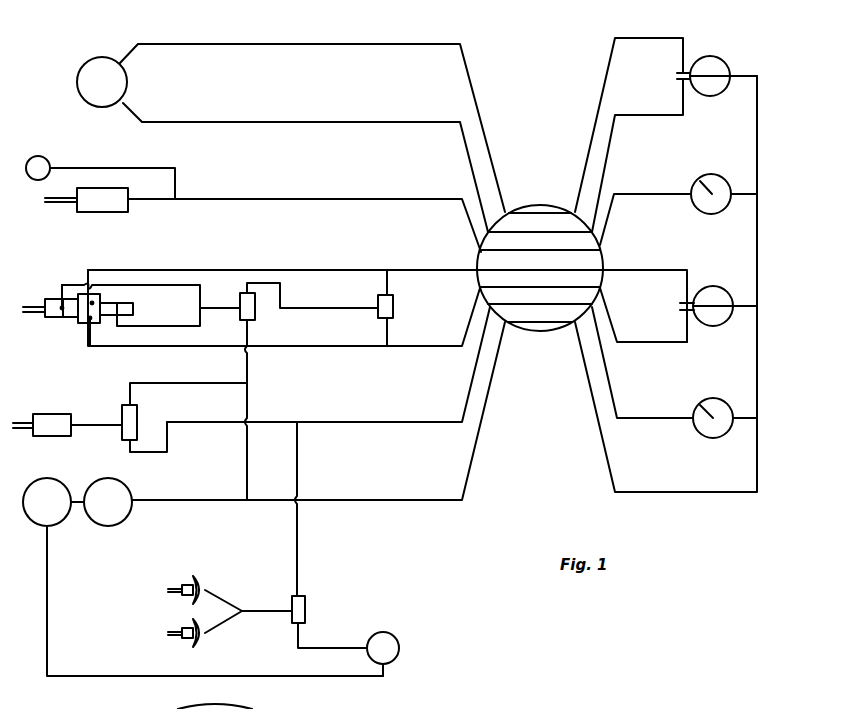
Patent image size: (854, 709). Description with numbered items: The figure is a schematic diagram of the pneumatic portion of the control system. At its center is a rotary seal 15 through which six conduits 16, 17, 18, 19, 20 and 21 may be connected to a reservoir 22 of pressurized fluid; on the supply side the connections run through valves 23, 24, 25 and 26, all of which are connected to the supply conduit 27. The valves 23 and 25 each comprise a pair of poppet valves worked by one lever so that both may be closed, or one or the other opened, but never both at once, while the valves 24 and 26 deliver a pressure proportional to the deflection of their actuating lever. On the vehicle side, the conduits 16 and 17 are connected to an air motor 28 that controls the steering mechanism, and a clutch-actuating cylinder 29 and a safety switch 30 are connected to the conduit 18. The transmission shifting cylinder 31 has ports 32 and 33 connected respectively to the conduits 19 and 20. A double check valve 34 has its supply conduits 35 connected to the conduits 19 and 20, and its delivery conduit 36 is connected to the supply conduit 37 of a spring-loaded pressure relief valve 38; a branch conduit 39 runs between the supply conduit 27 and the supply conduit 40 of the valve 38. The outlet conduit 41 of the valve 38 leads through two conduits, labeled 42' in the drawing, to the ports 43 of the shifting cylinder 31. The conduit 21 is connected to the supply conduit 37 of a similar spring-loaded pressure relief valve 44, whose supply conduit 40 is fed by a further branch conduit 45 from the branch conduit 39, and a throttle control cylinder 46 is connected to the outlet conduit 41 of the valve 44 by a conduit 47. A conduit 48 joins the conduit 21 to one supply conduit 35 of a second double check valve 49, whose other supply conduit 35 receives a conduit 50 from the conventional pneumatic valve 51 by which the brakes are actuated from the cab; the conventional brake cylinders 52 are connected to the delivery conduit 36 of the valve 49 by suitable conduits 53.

The rotary seal 15 is at (538, 206).
The conduit 16 is at (378, 44).
The conduit 17 is at (380, 122).
The conduit 18 is at (388, 199).
The conduit 19 is at (349, 270).
The conduit 20 is at (346, 346).
The conduit 21 is at (355, 422).
The reservoir 22 is at (102, 518).
The valve 23 is at (722, 66).
The valve 24 is at (728, 178).
The valve 25 is at (726, 290).
The valve 26 is at (728, 403).
The supply conduit 27 is at (757, 358).
The air motor 28 is at (97, 62).
The clutch-actuating cylinder 29 is at (86, 214).
The safety switch 30 is at (47, 160).
The transmission shifting cylinder 31 is at (50, 299).
The port 32 is at (94, 302).
The port 33 is at (89, 320).
The double check valve 34 is at (393, 306).
The supply conduit 35 is at (392, 295).
The delivery conduit 36 is at (378, 306).
The supply conduit 37 is at (242, 294).
The spring-loaded pressure relief valve 38 is at (255, 307).
The branch conduit 39 is at (250, 397).
The supply conduit 40 is at (253, 320).
The outlet conduit 41 is at (240, 311).
The shielding conductor 42' is at (131, 308).
The port 43 is at (58, 311).
The spring-loaded pressure relief valve 44 is at (132, 415).
The branch conduit 45 is at (180, 383).
The throttle control cylinder 46 is at (49, 414).
The conduit 47 is at (87, 437).
The conduit 48 is at (298, 470).
The double check valve 49 is at (305, 610).
The conduit 50 is at (324, 648).
The pneumatic valve 51 is at (390, 655).
The brake cylinders 52 is at (198, 620).
The conduits 53 is at (222, 604).